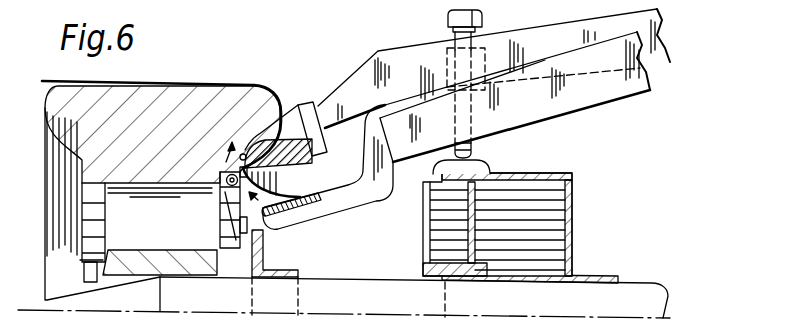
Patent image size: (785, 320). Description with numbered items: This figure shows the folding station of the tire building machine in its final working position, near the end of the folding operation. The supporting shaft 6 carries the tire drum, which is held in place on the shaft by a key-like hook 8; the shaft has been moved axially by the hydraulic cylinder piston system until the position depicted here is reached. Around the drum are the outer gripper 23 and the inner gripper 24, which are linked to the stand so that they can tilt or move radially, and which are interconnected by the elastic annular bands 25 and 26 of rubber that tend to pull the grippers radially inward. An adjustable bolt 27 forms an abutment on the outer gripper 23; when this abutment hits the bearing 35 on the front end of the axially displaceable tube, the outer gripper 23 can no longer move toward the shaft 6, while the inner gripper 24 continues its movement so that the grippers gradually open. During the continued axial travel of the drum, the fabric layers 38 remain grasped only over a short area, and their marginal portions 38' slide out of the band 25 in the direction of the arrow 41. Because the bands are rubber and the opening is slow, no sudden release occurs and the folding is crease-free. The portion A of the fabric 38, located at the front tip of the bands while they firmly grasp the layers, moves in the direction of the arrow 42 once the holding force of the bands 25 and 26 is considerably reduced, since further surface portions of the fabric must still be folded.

The supporting shaft 6 is at (358, 290).
The key-like hook 8 is at (97, 282).
The outer gripper 23 is at (363, 78).
The inner gripper 24 is at (417, 152).
The elastic annular band 25 is at (312, 160).
The elastic annular band 26 is at (305, 212).
The adjustable bolt 27 is at (472, 148).
The bearing 35 is at (540, 173).
The fabric layers 38 is at (161, 159).
The marginal portions of the fabric 38' is at (282, 180).
The arrow 41 is at (268, 202).
The arrow 42 is at (240, 170).
The portion of fabric A is at (245, 150).